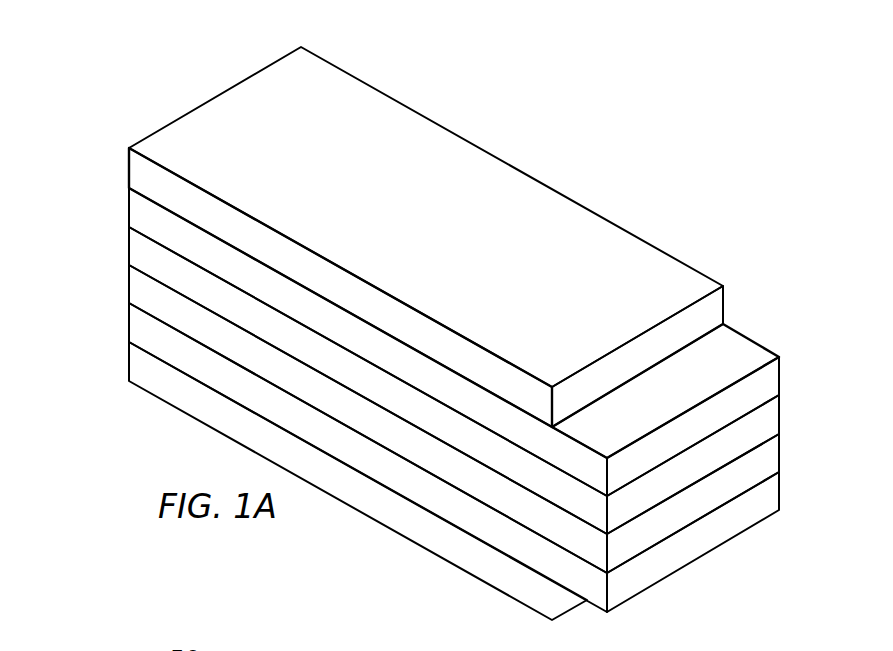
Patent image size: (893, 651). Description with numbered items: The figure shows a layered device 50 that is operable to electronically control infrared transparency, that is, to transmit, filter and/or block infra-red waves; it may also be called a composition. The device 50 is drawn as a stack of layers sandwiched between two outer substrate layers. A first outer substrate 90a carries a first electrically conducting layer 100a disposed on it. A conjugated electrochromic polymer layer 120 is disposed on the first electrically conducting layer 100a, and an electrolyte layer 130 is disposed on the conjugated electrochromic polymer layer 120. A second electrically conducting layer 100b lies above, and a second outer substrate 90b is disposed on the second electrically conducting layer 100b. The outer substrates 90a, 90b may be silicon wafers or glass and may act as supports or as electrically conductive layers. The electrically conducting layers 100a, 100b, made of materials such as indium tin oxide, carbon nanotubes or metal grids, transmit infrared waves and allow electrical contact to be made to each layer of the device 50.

The device 50 is at (164, 77).
The first outer substrate 90a is at (141, 175).
The first electrically conducting layer 100a is at (140, 212).
The conjugated electrochromic polymer layer 120 is at (140, 252).
The electrolyte layer 130 is at (137, 287).
The second electrically conducting layer 100b is at (140, 327).
The second outer substrate 90b is at (142, 367).